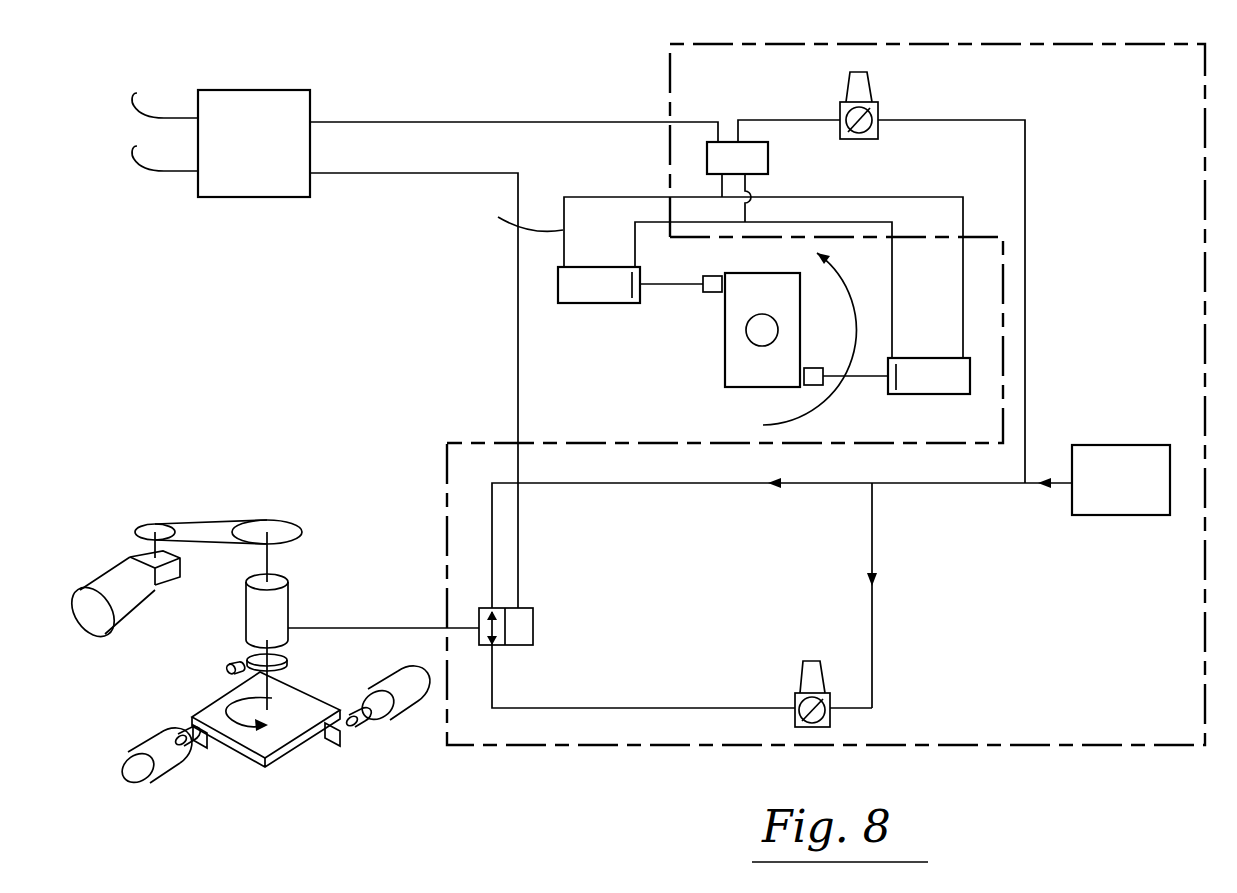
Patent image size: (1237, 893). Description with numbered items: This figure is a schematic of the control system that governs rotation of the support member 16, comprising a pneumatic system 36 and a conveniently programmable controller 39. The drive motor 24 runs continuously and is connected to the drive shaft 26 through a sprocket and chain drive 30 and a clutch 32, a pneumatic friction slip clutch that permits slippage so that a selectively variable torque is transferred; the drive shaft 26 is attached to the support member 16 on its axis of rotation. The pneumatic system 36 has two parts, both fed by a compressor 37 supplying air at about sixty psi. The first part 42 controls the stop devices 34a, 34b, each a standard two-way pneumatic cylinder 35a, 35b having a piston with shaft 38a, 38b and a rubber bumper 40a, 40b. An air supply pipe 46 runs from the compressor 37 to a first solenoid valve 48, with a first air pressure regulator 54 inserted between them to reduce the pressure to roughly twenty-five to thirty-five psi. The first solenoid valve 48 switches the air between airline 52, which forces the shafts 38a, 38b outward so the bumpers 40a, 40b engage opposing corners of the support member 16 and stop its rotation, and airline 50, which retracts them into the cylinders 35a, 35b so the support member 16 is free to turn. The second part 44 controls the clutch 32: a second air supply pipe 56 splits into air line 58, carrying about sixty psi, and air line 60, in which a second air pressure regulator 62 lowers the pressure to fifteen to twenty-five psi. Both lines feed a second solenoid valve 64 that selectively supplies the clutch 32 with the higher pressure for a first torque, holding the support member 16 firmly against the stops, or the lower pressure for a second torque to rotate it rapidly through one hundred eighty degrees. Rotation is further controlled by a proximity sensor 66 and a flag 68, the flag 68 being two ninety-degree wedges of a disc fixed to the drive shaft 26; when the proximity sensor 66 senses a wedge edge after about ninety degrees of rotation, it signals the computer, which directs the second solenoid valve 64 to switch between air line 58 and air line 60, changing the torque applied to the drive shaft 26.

The support member 16 is at (720, 373).
The drive motor 24 is at (113, 622).
The drive shaft 26 is at (275, 688).
The sprocket and chain drive 30 is at (157, 528).
The clutch 32 is at (288, 597).
The stop device 34a is at (558, 284).
The stop device 34b is at (975, 377).
The two-way pneumatic cylinder 35a is at (580, 303).
The two-way pneumatic cylinder 35b is at (935, 394).
The pneumatic system 36 is at (1127, 748).
The compressor 37 is at (1143, 445).
The piston with shaft 38a is at (660, 288).
The piston with shaft 38b is at (857, 377).
The programmable controller 39 is at (247, 89).
The bumper 40a is at (715, 293).
The bumper 40b is at (812, 386).
The first part 42 is at (1008, 300).
The second part 44 is at (878, 650).
The air supply pipe 46 is at (1028, 232).
The first solenoid valve 48 is at (765, 165).
The airline 50 is at (848, 222).
The airline 52 is at (635, 197).
The first air pressure regulator 54 is at (870, 91).
The second air supply pipe 56 is at (932, 484).
The air line 58 is at (697, 484).
The air line 60 is at (607, 707).
The second air pressure regulator 62 is at (800, 683).
The second solenoid valve 64 is at (478, 607).
The proximity sensor 66 is at (227, 666).
The flag 68 is at (290, 658).